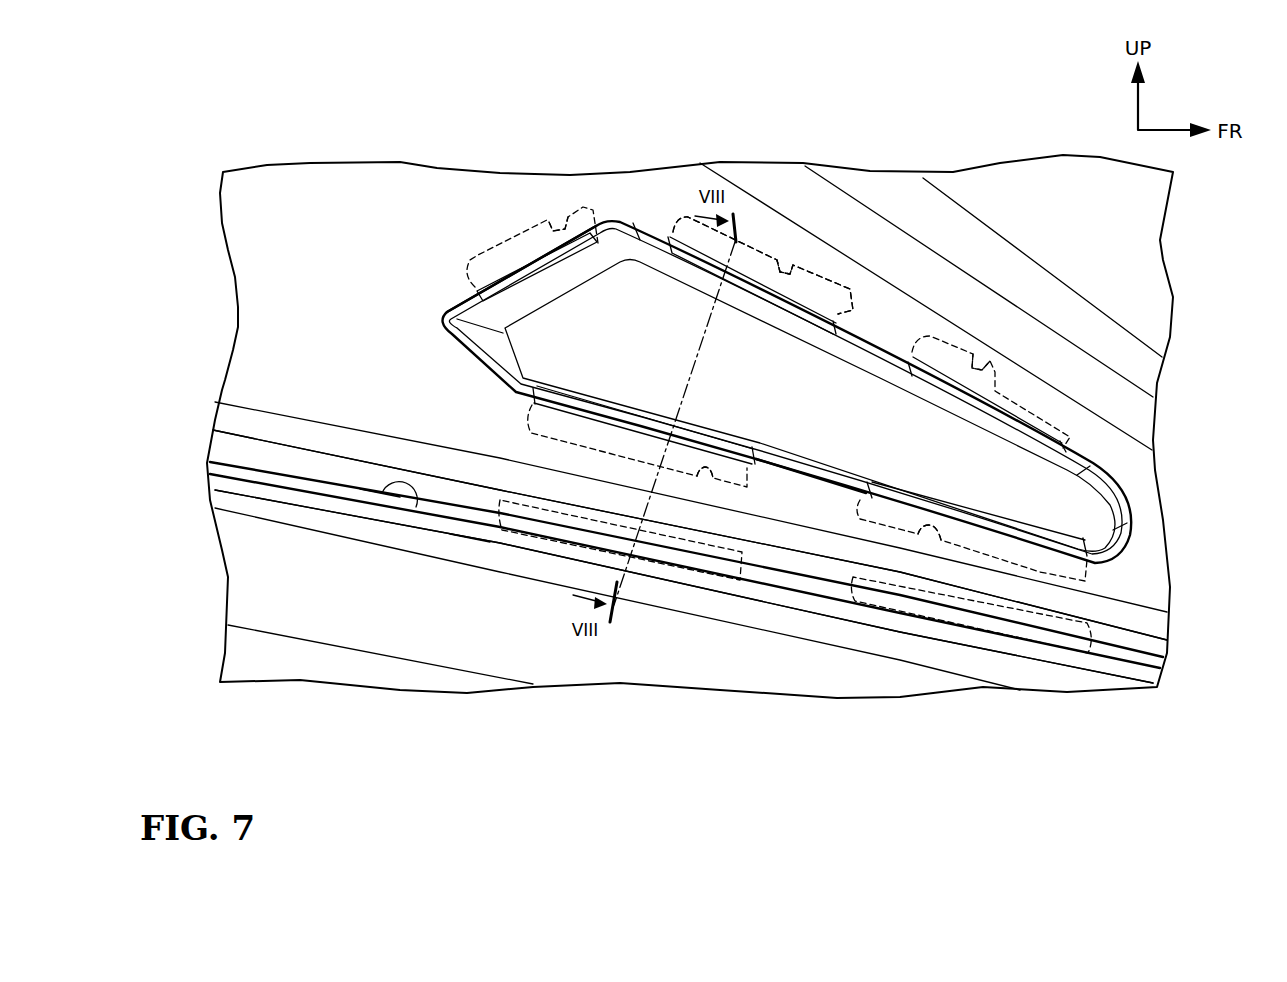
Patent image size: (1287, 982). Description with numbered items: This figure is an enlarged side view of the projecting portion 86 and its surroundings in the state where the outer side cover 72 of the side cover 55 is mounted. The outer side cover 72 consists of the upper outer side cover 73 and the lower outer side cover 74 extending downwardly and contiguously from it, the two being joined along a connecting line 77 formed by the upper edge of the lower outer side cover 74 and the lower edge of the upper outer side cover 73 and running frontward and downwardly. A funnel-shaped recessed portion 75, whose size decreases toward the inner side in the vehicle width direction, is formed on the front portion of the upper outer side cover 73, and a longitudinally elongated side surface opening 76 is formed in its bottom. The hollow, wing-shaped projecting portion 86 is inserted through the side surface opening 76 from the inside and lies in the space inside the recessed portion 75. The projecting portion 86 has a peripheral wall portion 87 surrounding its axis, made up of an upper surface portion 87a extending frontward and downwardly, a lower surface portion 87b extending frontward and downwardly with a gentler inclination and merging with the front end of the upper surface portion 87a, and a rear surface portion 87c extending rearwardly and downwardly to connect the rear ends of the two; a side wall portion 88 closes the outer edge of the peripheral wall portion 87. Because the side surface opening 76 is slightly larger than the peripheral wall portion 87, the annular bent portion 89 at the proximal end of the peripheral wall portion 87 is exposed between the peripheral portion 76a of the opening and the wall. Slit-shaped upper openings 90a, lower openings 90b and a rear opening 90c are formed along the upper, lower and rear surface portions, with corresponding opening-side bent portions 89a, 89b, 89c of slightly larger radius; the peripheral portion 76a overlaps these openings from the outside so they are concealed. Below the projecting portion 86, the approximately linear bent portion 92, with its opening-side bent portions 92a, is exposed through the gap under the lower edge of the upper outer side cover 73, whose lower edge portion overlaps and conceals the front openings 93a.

The side cover 55 is at (870, 173).
The outer side cover 72 is at (137, 412).
The upper outer side cover 73 is at (290, 396).
The lower outer side cover 74 is at (243, 542).
The recessed portion 75 is at (542, 200).
The side surface opening 76 is at (433, 262).
The peripheral portion 76a is at (765, 255).
The connecting line 77 is at (467, 512).
The projecting portion 86 is at (641, 232).
The peripheral wall portion 87 is at (585, 262).
The upper surface portion 87a is at (863, 356).
The lower surface portion 87b is at (836, 470).
The rear surface portion 87c is at (470, 260).
The side wall portion 88 is at (614, 305).
The bent portion 89 is at (650, 236).
The opening-side bent portion 89a is at (743, 277).
The opening-side bent portion 89b is at (652, 550).
The opening-side bent portion 89c is at (527, 262).
The upper openings 90a is at (803, 262).
The lower openings 90b is at (712, 478).
The rear opening 90c is at (564, 218).
The bent portion 92 is at (787, 580).
The opening-side bent portion 92a is at (687, 433).
The front openings 93a is at (532, 433).